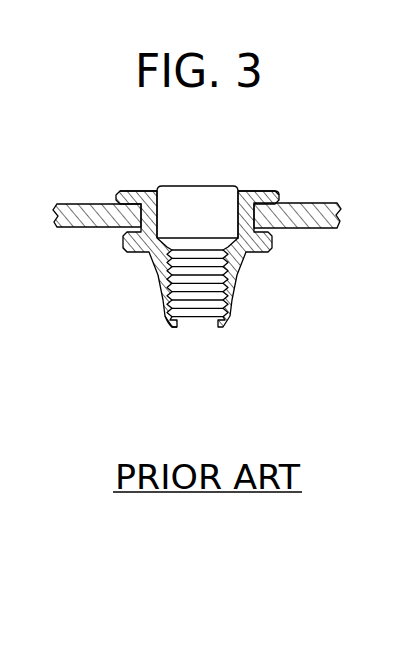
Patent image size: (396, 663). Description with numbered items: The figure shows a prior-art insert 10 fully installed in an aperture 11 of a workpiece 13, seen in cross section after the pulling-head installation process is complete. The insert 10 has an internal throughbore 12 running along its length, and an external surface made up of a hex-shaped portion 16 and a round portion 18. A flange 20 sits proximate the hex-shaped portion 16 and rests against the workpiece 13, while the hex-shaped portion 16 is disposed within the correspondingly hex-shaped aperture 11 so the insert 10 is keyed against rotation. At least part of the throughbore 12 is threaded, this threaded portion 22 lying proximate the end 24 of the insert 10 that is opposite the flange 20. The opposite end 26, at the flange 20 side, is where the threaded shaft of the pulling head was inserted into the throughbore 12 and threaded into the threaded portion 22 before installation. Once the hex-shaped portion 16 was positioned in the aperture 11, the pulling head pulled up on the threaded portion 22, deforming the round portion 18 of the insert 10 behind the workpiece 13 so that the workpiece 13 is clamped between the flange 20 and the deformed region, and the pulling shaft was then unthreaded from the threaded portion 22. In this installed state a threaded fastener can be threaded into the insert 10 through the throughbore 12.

The insert 10 is at (202, 269).
The aperture 11 is at (242, 206).
The internal throughbore 12 is at (227, 274).
The workpiece 13 is at (308, 229).
The hex-shaped portion 16 is at (140, 221).
The round portion 18 is at (235, 278).
The flange 20 is at (282, 200).
The threaded portion 22 is at (197, 320).
The end 24 is at (172, 327).
The end 26 is at (147, 191).